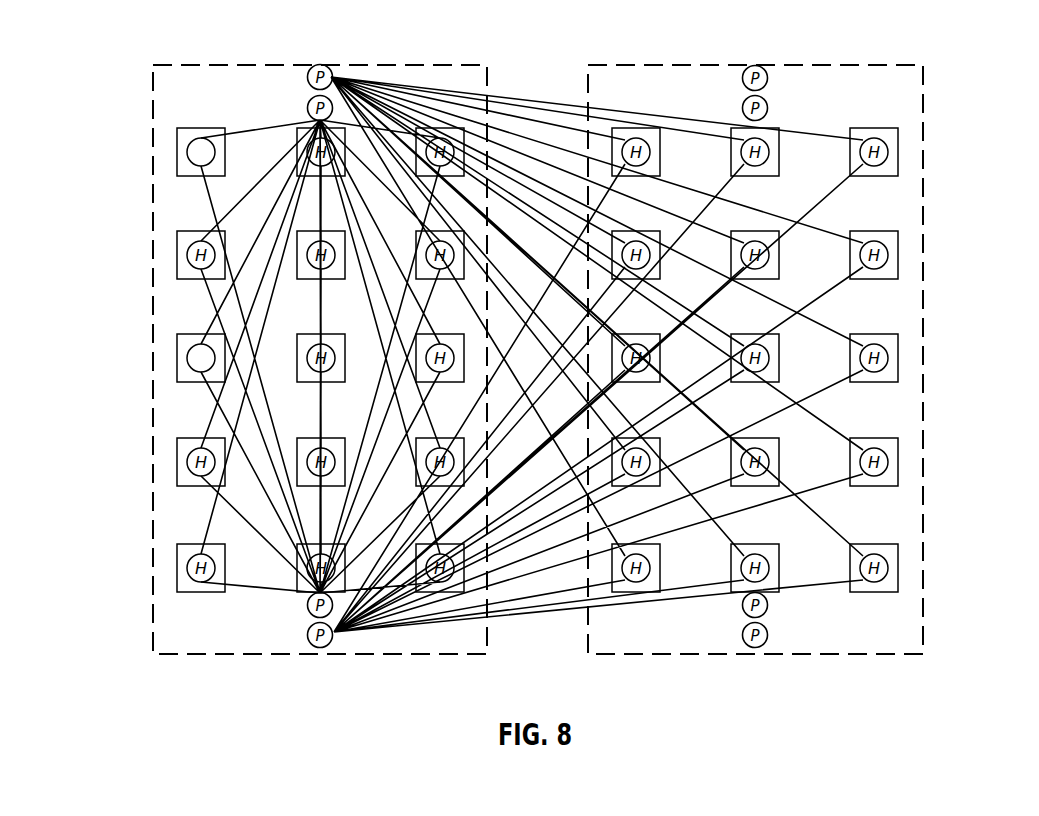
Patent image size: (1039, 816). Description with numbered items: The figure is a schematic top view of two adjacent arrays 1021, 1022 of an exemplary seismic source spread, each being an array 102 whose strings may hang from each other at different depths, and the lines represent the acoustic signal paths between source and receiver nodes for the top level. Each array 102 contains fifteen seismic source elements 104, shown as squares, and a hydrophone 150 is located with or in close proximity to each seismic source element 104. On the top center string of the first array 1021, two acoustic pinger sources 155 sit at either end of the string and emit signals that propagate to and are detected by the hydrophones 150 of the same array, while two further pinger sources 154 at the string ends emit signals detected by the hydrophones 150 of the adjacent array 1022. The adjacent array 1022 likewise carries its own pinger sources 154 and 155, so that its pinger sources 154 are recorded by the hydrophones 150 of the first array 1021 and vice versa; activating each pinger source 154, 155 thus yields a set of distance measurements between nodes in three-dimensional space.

The array 102 is at (537, 359).
The array 1021 is at (152, 552).
The array 1022 is at (925, 613).
The seismic source element 104 is at (197, 125).
The hydrophone 150 is at (187, 152).
The pinger source 154 is at (326, 67).
The pinger source 155 is at (310, 98).